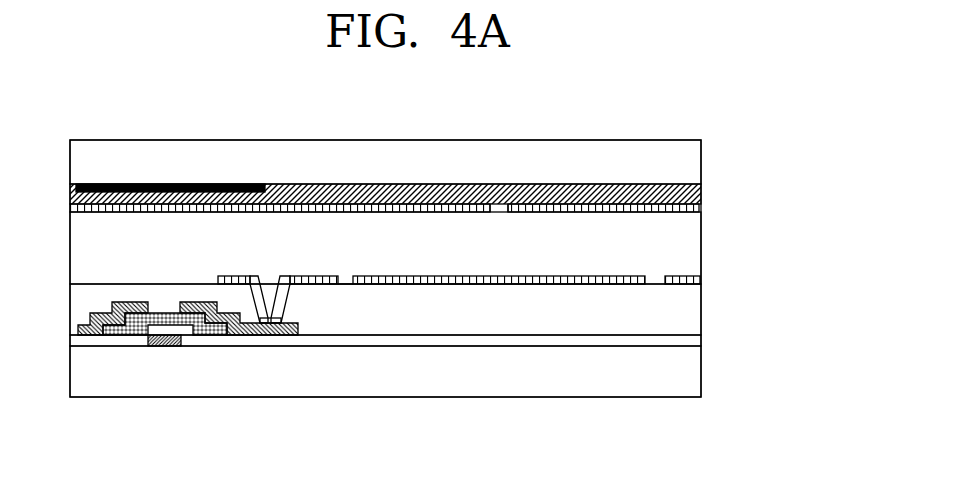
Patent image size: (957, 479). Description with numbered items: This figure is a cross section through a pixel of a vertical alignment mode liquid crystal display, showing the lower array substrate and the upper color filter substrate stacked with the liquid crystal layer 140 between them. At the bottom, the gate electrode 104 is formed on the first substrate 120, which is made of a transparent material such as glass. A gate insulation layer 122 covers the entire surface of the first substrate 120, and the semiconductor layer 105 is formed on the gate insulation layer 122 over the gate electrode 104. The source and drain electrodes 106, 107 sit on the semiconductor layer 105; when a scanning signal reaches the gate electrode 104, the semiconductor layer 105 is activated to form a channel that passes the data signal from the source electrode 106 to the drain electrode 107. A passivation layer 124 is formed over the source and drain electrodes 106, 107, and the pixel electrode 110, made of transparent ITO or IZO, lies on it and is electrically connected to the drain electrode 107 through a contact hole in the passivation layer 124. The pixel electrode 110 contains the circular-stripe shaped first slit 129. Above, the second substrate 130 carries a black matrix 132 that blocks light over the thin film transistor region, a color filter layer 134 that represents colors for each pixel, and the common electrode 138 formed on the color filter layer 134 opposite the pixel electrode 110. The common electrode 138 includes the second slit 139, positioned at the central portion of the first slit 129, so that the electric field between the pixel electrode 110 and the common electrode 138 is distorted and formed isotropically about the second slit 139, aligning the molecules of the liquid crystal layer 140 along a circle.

The gate electrode 104 is at (165, 346).
The semiconductor layer 105 is at (212, 335).
The source electrode 106 is at (92, 335).
The drain electrode 107 is at (278, 335).
The pixel electrode 110 is at (683, 283).
The first substrate 120 is at (683, 375).
The gate insulation layer 122 is at (683, 344).
The passivation layer 124 is at (683, 313).
The first slit 129 is at (347, 290).
The second substrate 130 is at (683, 163).
The black matrix 132 is at (193, 186).
The color filter layer 134 is at (608, 198).
The common electrode 138 is at (683, 210).
The second slit 139 is at (501, 194).
The liquid crystal layer 140 is at (683, 245).